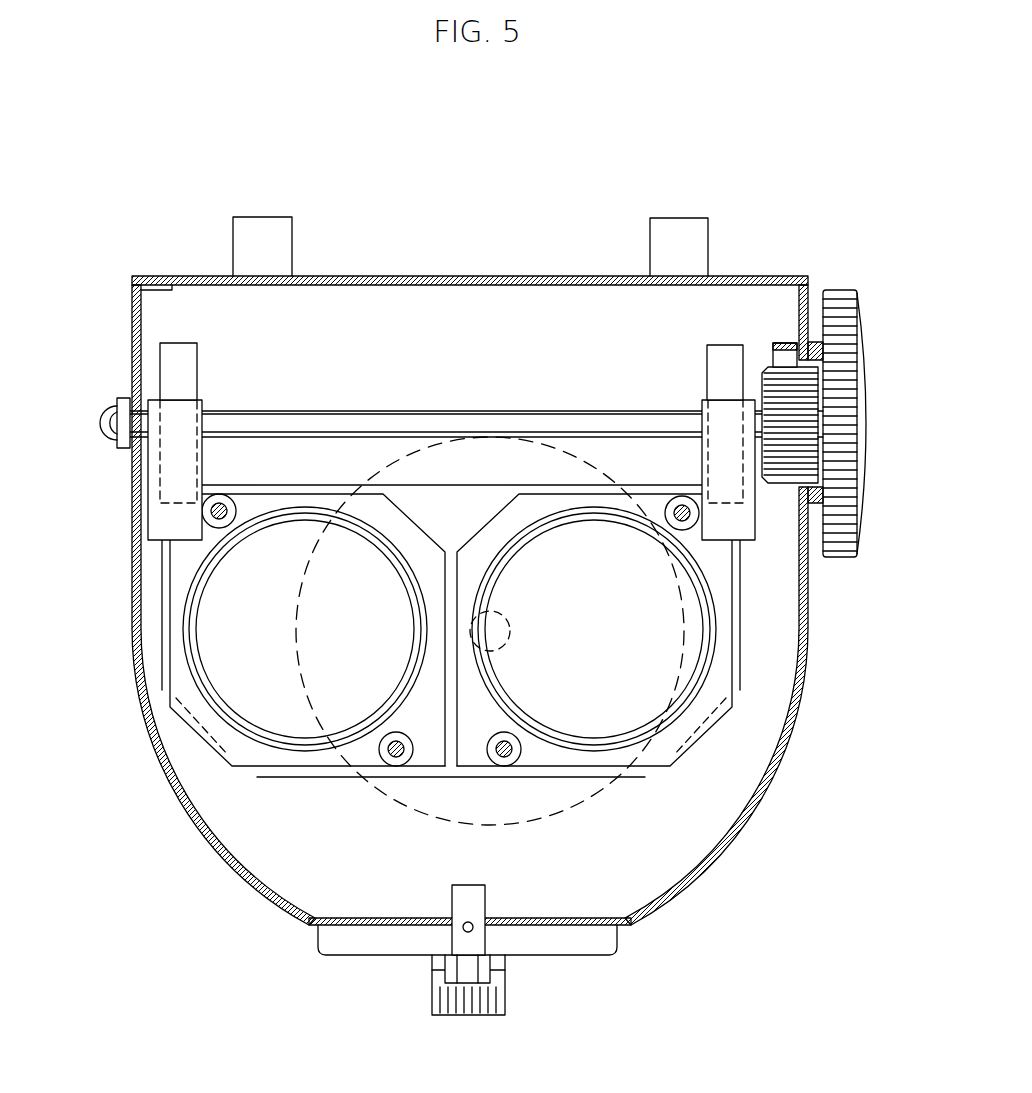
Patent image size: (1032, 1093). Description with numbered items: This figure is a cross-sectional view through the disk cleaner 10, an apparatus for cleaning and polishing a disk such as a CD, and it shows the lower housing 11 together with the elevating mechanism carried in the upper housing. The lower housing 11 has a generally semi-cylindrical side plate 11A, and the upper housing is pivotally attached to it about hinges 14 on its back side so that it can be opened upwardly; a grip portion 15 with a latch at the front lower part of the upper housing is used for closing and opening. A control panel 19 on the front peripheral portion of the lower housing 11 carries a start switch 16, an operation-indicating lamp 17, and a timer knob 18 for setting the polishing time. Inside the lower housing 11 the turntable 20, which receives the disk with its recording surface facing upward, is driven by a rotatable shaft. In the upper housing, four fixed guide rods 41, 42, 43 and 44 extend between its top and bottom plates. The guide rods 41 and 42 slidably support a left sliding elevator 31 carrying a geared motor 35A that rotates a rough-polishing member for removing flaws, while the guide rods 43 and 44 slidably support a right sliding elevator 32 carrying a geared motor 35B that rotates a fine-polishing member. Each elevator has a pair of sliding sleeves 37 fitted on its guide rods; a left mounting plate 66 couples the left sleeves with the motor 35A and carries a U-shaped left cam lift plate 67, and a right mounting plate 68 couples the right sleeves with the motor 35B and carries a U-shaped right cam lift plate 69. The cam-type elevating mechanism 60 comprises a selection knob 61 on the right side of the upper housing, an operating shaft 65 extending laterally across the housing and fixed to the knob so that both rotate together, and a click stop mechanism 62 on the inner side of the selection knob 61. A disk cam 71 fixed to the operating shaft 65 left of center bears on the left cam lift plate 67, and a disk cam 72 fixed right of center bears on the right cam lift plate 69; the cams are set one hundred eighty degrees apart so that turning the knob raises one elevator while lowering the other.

The disk cleaner 10 is at (481, 216).
The lower housing 11 is at (185, 828).
The semi-cylindrical side plate 11A is at (727, 882).
The hinges 14 is at (265, 232).
The grip portion 15 is at (478, 940).
The start switch 16 is at (443, 968).
The operation-indicating lamp 17 is at (493, 968).
The timer knob 18 is at (478, 1003).
The control panel 19 is at (346, 945).
The turntable 20 is at (590, 815).
The left sliding elevator 31 is at (252, 482).
The right sliding elevator 32 is at (584, 491).
The geared motor 35A is at (228, 636).
The geared motor 35B is at (692, 641).
The sliding sleeves 37 is at (672, 498).
The guide rod 41 is at (203, 514).
The guide rod 42 is at (396, 754).
The guide rod 43 is at (513, 757).
The guide rod 44 is at (690, 522).
The cam-type elevating mechanism 60 is at (735, 334).
The selection knob 61 is at (843, 335).
The click stop mechanism 62 is at (783, 337).
The operating shaft 65 is at (382, 428).
The left mounting plate 66 is at (233, 766).
The left cam lift plate 67 is at (152, 470).
The right mounting plate 68 is at (698, 720).
The right cam lift plate 69 is at (747, 508).
The disk cam 71 is at (174, 355).
The disk cam 72 is at (722, 360).